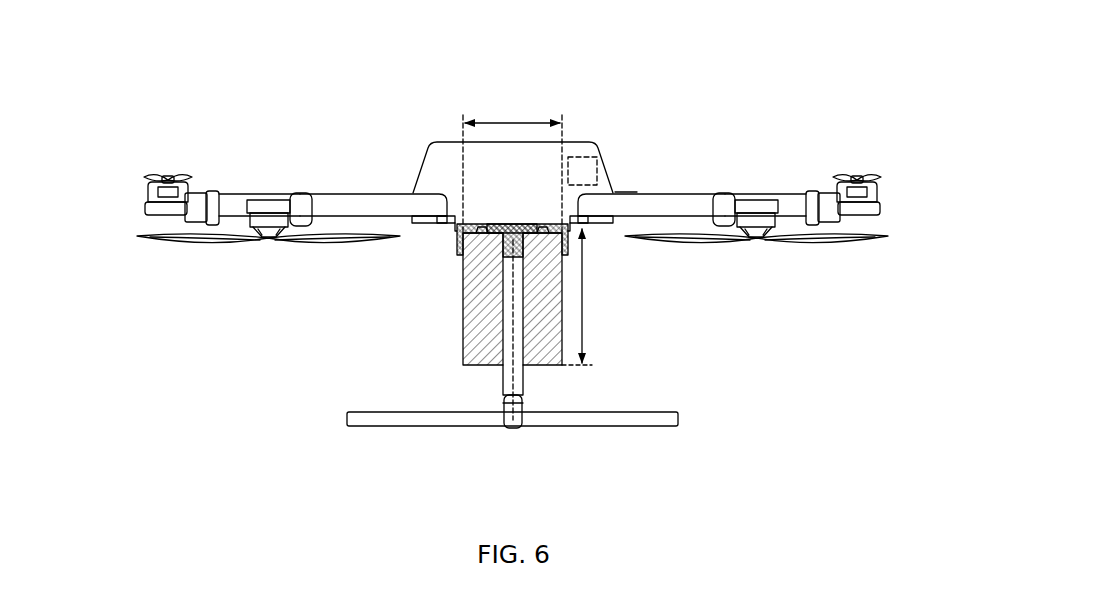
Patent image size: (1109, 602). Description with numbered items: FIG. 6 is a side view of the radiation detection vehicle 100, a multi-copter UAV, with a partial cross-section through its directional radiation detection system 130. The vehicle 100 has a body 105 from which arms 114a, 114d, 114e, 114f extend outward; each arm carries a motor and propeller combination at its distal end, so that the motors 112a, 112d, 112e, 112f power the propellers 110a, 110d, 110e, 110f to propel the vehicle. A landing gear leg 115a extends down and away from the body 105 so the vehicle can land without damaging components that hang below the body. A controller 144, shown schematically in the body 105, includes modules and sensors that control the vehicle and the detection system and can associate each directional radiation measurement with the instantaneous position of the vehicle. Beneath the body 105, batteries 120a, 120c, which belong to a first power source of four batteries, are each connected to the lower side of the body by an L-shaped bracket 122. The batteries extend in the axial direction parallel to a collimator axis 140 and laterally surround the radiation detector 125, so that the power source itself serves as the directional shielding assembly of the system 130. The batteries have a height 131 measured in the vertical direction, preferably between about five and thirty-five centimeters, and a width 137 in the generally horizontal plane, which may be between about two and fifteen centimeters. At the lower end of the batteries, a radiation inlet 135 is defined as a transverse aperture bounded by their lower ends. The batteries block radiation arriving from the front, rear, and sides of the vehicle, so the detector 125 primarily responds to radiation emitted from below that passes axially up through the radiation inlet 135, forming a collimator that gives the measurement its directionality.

The radiation detection vehicle 100 is at (372, 90).
The body 105 is at (442, 157).
The propeller 110a is at (215, 238).
The propeller 110d is at (803, 245).
The propeller 110e is at (873, 175).
The propeller 110f is at (152, 176).
The motor 112a is at (268, 218).
The motor 112d is at (753, 207).
The motor 112e is at (873, 193).
The motor 112f is at (153, 192).
The arm 114a is at (385, 198).
The arm 114d is at (665, 203).
The arm 114e is at (790, 198).
The arm 114f is at (225, 200).
The leg 115a is at (410, 417).
The battery 120a is at (477, 341).
The battery 120c is at (543, 355).
The L-shaped bracket 122 is at (455, 236).
The radiation detector 125 is at (505, 245).
The directional radiation detection system 130 is at (478, 375).
The height 131 is at (583, 293).
The radiation inlet 135 is at (520, 367).
The width 137 is at (510, 120).
The collimator axis 140 is at (512, 343).
The controller 144 is at (583, 162).